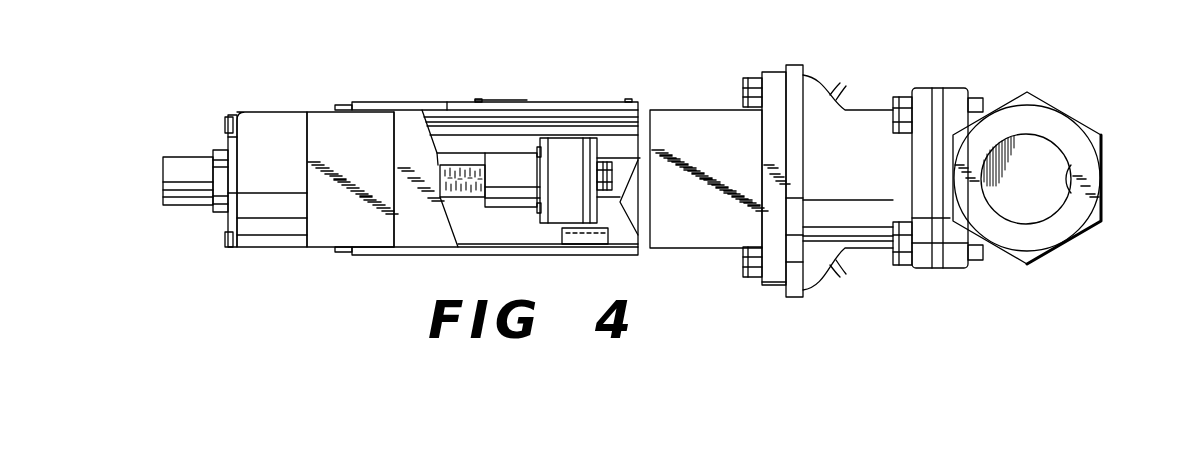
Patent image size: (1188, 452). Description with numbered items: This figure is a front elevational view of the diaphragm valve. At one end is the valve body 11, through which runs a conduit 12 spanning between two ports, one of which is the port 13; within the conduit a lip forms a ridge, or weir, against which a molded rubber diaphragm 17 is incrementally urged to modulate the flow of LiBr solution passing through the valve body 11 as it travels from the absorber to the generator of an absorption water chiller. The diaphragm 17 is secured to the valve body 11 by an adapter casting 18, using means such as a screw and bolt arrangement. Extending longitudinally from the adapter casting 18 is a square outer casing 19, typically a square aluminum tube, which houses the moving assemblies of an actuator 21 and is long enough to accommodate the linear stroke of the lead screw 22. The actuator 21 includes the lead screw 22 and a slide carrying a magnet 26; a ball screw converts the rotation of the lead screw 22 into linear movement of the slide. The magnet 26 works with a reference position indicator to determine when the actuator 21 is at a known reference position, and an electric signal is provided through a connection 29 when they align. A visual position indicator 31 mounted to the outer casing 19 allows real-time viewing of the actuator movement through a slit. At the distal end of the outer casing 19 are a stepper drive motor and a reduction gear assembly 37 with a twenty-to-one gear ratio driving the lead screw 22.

The valve body 11 is at (1063, 206).
The conduit 12 is at (1028, 177).
The port 13 is at (1102, 172).
The molded rubber diaphragm 17 is at (935, 88).
The adapter casting 18 is at (843, 105).
The square outer casing 19 is at (618, 137).
The actuator 21 is at (512, 219).
The lead screw 22 is at (467, 167).
The magnet 26 is at (590, 138).
The connection 29 is at (497, 272).
The visual position indicator 31 is at (550, 110).
The reduction gear assembly 37 is at (274, 112).